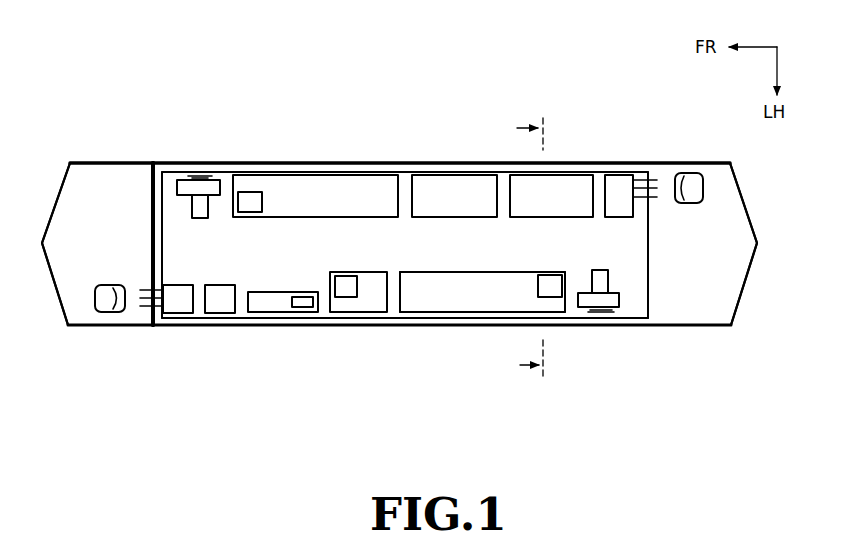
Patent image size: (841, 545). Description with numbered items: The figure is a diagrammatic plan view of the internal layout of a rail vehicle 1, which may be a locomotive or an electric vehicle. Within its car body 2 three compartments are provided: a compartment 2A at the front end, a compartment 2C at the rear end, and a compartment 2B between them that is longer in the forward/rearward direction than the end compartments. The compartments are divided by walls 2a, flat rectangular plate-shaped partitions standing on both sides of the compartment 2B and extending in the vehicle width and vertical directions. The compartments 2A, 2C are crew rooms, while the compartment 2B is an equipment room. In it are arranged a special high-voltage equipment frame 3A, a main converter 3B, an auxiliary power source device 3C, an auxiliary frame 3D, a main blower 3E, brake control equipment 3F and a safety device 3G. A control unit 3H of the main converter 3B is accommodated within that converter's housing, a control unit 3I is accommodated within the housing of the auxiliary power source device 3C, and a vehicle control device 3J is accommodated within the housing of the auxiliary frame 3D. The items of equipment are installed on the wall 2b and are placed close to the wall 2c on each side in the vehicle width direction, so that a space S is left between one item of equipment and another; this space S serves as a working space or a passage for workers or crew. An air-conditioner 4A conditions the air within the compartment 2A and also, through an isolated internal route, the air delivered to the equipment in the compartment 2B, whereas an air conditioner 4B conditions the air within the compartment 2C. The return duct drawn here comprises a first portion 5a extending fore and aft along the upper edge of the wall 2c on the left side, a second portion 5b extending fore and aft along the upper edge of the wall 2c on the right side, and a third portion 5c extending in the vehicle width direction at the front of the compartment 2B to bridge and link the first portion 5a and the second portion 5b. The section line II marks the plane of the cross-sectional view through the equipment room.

The rail vehicle 1 is at (638, 60).
The car body 2 is at (601, 161).
The compartment 2A is at (66, 210).
The compartment 2B is at (503, 238).
The compartment 2C is at (738, 208).
The wall 2a is at (150, 190).
The wall 2b is at (630, 292).
The wall 2c is at (362, 169).
The special high-voltage equipment frame 3A is at (455, 185).
The main converter 3B is at (300, 188).
The auxiliary power source device 3C is at (377, 300).
The auxiliary frame 3D is at (257, 305).
The main blower 3E is at (198, 180).
The brake control equipment 3F is at (560, 185).
The safety device 3G is at (222, 300).
The control unit 3H is at (248, 192).
The control unit 3I is at (340, 290).
The vehicle control device 3J is at (305, 305).
The air-conditioner 4A is at (177, 312).
The air conditioner 4B is at (620, 185).
The first portion 5a is at (485, 325).
The second portion 5b is at (400, 175).
The third portion 5c is at (168, 188).
The space S is at (627, 247).
The section line II- II is at (530, 244).